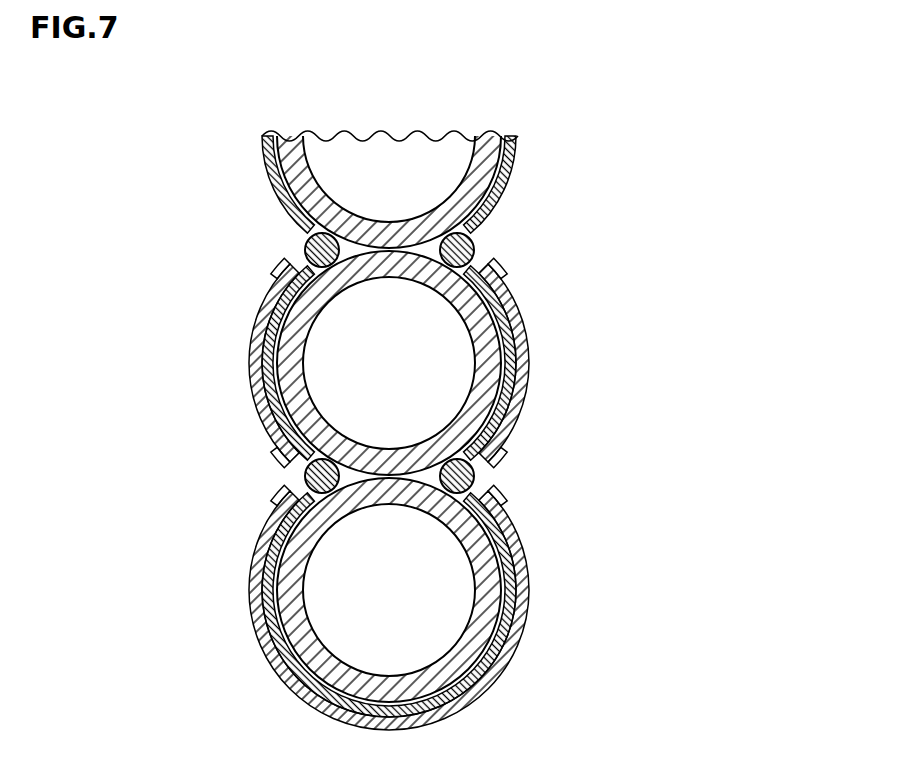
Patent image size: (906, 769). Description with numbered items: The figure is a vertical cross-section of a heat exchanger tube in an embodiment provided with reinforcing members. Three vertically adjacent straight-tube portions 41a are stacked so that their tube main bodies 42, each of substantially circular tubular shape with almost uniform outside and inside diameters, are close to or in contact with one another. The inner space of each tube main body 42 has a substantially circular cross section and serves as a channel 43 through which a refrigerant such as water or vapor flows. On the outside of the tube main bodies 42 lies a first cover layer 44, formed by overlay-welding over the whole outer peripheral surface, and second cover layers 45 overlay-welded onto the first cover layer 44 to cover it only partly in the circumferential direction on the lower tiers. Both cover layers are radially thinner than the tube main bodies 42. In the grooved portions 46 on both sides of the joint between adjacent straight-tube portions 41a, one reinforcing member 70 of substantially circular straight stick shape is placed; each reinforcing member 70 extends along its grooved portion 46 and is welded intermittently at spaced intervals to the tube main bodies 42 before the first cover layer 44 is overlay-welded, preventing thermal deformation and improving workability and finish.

The straight-tube portion 41a is at (404, 401).
The tube main body 42 is at (483, 150).
The channel 43 is at (440, 169).
The first cover layer 44 is at (268, 152).
The second cover layer 45 is at (524, 326).
The grooved portion 46 is at (300, 238).
The reinforcing member 70 is at (305, 245).